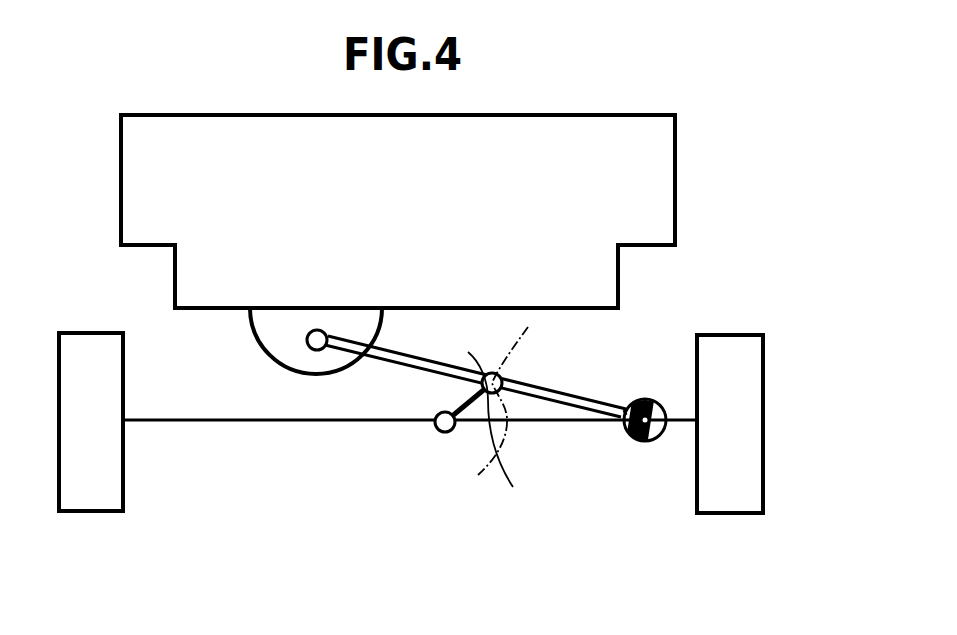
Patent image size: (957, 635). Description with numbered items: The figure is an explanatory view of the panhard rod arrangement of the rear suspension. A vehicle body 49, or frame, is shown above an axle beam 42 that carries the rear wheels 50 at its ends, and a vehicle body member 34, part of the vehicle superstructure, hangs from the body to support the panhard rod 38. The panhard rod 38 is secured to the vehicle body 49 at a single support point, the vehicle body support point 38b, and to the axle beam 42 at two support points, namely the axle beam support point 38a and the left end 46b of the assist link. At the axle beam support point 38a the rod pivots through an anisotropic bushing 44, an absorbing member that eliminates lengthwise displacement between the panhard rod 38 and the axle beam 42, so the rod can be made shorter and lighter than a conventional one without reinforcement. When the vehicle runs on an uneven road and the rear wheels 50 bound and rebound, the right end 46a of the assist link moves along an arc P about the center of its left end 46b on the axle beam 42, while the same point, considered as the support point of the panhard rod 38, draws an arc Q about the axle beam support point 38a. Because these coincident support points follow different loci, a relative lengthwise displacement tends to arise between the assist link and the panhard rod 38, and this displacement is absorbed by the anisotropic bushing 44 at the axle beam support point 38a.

The vehicle body 49 is at (677, 203).
The vehicle body member 34 is at (253, 333).
The panhard rod 38 is at (410, 372).
The axle beam support point 38a is at (645, 398).
The vehicle body support point 38b is at (318, 345).
The axle beam 42 is at (193, 422).
The anisotropic bushing 44 is at (637, 440).
The right end of assist link 46a is at (500, 378).
The left end of assist link 46b is at (440, 430).
The rear wheels 50 is at (88, 512).
The arc P is at (508, 440).
The arc Q is at (484, 433).